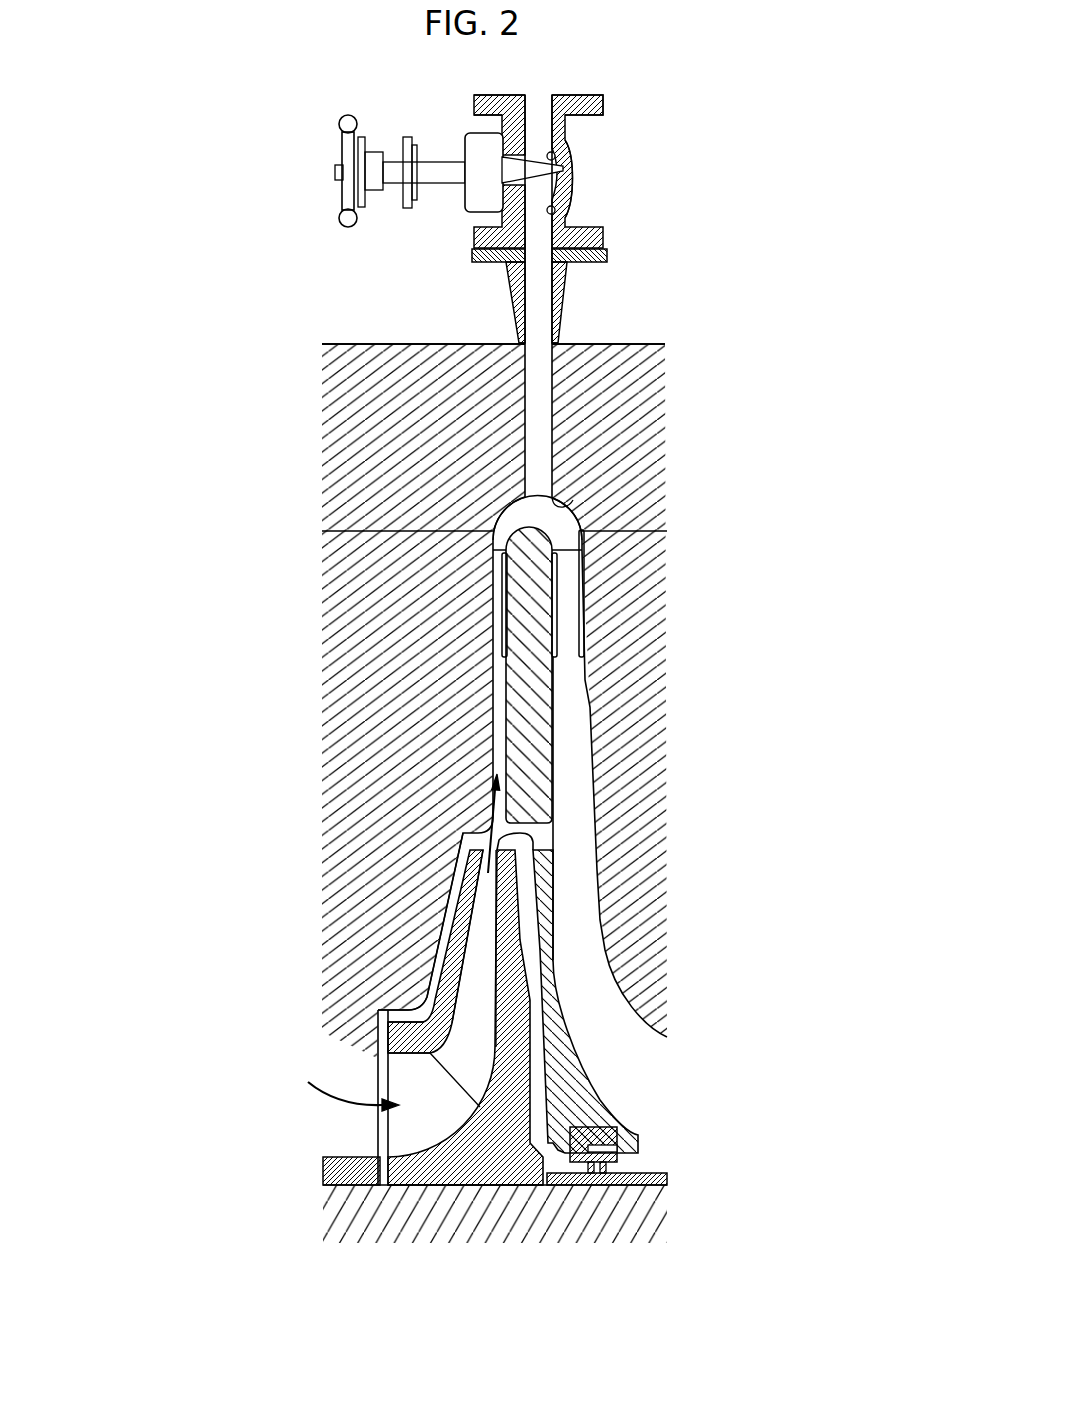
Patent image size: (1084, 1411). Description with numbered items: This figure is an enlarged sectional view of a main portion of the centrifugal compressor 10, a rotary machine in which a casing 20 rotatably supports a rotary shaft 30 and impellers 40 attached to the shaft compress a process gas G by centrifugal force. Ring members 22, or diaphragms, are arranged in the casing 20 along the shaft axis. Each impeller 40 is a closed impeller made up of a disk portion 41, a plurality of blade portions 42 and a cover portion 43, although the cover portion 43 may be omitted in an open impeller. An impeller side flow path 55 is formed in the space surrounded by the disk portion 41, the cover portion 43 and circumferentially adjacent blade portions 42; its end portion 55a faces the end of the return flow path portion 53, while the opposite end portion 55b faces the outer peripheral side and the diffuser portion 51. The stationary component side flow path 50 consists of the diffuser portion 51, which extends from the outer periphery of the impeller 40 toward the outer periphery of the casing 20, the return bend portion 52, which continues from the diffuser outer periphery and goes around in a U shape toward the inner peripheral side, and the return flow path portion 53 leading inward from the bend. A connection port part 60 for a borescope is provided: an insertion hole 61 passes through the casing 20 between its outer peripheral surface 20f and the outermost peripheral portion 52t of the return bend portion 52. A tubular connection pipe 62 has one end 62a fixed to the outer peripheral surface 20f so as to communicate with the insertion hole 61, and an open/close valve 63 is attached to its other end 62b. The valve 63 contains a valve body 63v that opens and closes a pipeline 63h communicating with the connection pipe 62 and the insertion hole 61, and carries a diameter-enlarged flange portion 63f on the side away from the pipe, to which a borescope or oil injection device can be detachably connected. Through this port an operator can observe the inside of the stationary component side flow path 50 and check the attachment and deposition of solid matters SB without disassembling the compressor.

The centrifugal compressor 10 is at (493, 307).
The casing 20 is at (366, 343).
The outer peripheral surface of the casing 20f is at (437, 343).
The ring member 22 is at (337, 892).
The rotary shaft 30 is at (653, 1175).
The impeller 40 is at (390, 1033).
The disk portion 41 is at (520, 930).
The blade portion 42 is at (488, 913).
The cover portion 43 is at (450, 937).
The stationary component side flow path 50 is at (598, 532).
The diffuser portion 51 is at (500, 697).
The return bend portion 52 is at (528, 510).
The outermost peripheral portion of the return bend portion 52t is at (573, 500).
The return flow path portion 53 is at (570, 573).
The impeller side flow path 55 is at (488, 953).
The end portion of the impeller side flow path 55a is at (387, 1127).
The end portion of the impeller side flow path 55b is at (525, 833).
The connection port part 60 is at (478, 131).
The insertion hole 61 is at (531, 412).
The connection pipe 62 is at (560, 322).
The one end of the connection pipe 62a is at (557, 343).
The other end of the connection pipe 62b is at (604, 260).
The open/close valve 63 is at (567, 190).
The flange portion 63f is at (604, 104).
The valve body 63v is at (572, 153).
The pipeline 63h is at (566, 213).
The solid matters SB is at (503, 553).
The process gas G is at (490, 792).